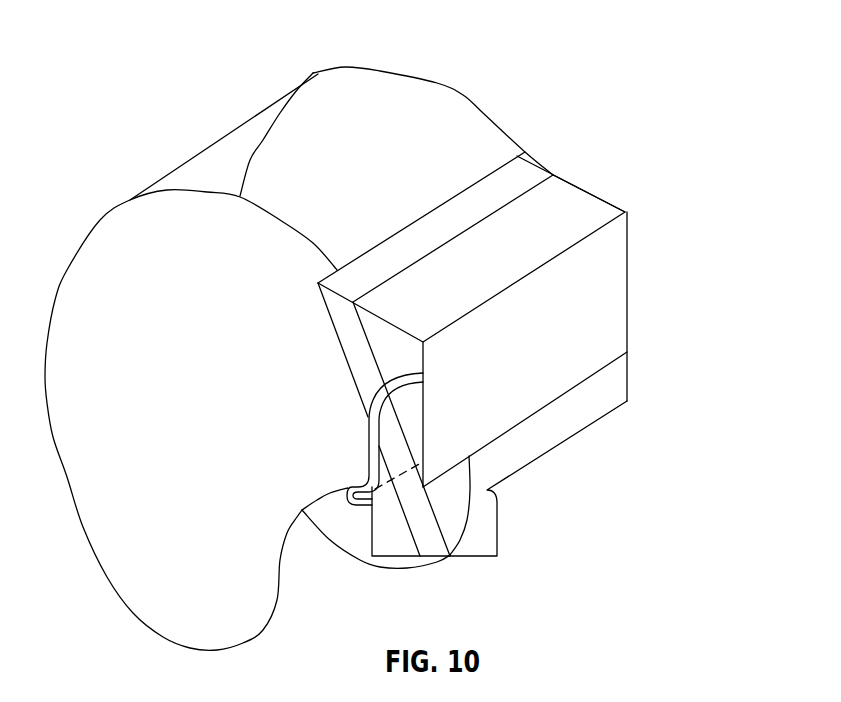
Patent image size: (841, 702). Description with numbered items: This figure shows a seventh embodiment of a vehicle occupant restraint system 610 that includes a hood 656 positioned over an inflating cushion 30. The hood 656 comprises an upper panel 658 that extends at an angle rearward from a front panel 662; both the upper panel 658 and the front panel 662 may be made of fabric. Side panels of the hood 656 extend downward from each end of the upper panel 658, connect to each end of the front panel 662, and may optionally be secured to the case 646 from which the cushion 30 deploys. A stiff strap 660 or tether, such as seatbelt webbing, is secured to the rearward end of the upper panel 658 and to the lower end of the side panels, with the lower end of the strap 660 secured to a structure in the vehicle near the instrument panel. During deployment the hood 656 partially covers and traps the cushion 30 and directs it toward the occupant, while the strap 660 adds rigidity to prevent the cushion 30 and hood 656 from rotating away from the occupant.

The cushion 30 is at (100, 220).
The vehicle occupant restraint system 610 is at (655, 67).
The case 646 is at (498, 527).
The hood 656 is at (628, 285).
The upper panel 658 is at (596, 194).
The strap 660 is at (438, 205).
The front panel 662 is at (610, 333).